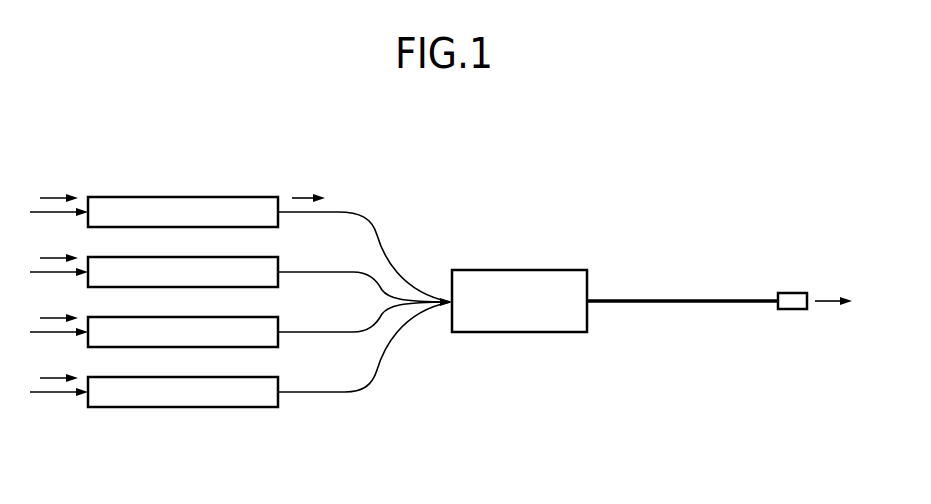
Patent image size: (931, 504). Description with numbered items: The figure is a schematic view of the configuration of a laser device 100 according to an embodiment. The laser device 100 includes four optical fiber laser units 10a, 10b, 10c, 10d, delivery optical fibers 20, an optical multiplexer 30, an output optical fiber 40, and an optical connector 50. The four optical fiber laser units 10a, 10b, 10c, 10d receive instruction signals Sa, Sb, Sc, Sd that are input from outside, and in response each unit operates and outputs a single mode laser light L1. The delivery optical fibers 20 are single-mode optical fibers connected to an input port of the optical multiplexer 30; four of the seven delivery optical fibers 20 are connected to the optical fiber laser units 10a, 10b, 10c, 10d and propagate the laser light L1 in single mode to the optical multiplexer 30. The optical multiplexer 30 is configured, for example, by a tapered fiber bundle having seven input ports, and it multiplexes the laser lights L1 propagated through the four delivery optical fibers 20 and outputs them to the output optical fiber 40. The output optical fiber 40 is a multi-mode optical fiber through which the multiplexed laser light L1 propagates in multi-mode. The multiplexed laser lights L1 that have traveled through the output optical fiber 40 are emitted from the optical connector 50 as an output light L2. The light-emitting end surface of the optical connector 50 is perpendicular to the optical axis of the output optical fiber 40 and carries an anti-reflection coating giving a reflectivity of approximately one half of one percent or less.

The laser device 100 is at (612, 162).
The optical fiber laser unit 10a is at (157, 175).
The optical fiber laser unit 10b is at (288, 257).
The optical fiber laser unit 10c is at (288, 313).
The optical fiber laser unit 10d is at (157, 418).
The delivery optical fiber 20 is at (370, 208).
The optical multiplexer 30 is at (517, 270).
The output optical fiber 40 is at (672, 300).
The optical connector 50 is at (793, 310).
The laser light L1 is at (303, 193).
The output light L2 is at (828, 295).
The instruction signal Sa is at (48, 198).
The instruction signal Sb is at (48, 258).
The instruction signal Sc is at (48, 318).
The instruction signal Sd is at (48, 378).